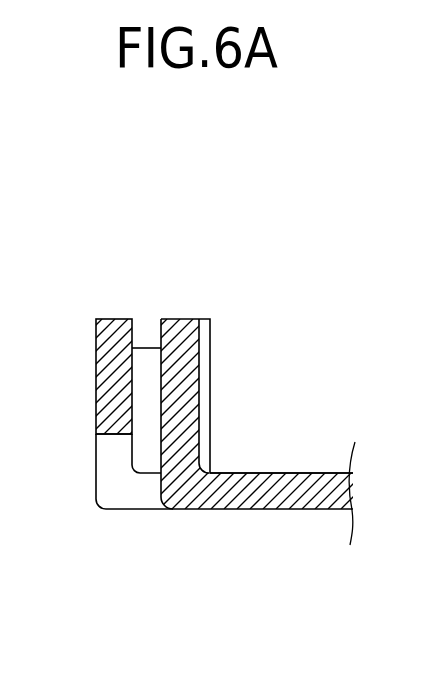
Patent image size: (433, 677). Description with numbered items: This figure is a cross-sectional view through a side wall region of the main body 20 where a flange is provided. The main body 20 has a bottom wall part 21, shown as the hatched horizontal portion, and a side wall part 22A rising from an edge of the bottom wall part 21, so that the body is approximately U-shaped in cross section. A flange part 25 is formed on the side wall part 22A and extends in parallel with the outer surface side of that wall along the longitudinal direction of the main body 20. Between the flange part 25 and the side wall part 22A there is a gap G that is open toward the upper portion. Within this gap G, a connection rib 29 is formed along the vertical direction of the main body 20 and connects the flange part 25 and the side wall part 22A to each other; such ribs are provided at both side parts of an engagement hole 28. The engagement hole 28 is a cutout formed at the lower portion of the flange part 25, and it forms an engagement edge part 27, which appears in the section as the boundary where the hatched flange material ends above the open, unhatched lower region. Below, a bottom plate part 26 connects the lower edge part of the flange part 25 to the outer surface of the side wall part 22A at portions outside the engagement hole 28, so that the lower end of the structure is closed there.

The main body 20 is at (239, 515).
The bottom wall part 21 is at (269, 473).
The side wall part 22A is at (186, 319).
The flange part 25 is at (95, 339).
The bottom plate part 26 is at (135, 510).
The engagement edge part 27 is at (118, 436).
The engagement hole 28 is at (119, 482).
The connection rib 29 is at (150, 348).
The gap G is at (152, 399).